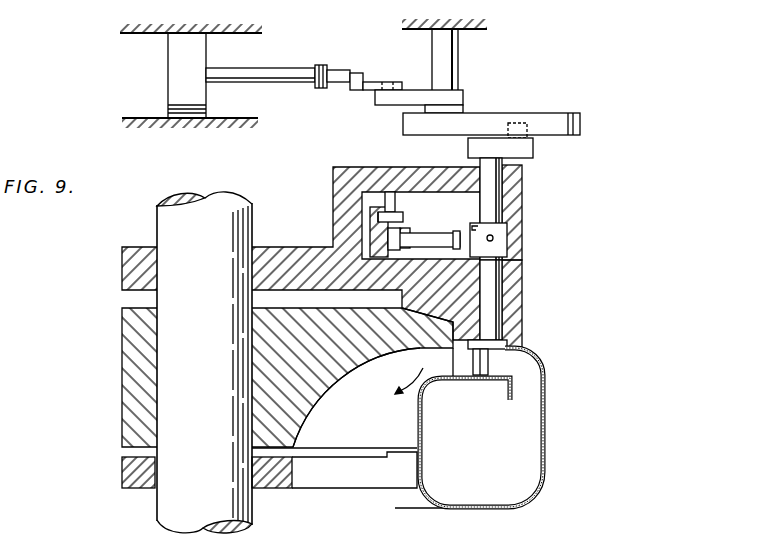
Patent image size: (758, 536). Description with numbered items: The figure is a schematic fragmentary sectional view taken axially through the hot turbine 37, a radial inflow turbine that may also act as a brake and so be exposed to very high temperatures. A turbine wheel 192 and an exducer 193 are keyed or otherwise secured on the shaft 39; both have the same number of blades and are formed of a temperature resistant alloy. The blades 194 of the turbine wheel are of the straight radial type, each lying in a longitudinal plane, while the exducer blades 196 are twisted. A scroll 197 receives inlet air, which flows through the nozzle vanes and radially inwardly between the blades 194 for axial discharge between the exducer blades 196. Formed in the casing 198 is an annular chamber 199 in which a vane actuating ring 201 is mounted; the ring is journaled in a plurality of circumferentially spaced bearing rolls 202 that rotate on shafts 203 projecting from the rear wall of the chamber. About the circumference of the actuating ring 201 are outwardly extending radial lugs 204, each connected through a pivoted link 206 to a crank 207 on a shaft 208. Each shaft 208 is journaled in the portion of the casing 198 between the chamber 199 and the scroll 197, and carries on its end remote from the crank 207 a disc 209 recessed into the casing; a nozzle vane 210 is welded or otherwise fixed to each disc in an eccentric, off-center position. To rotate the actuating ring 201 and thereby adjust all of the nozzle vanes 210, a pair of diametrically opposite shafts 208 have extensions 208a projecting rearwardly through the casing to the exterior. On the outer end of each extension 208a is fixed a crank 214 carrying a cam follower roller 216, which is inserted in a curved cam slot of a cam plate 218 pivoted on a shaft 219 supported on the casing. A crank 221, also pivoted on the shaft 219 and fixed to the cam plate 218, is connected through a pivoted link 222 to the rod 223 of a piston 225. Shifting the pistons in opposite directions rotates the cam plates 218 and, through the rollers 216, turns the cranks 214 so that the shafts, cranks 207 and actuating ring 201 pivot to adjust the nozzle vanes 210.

The hot turbine 37 is at (582, 371).
The shaft 39 is at (167, 505).
The turbine wheel 192 is at (133, 362).
The exducer 193 is at (280, 486).
The blades of the turbine wheel 194 is at (349, 400).
The exducer blades 196 is at (385, 468).
The scroll 197 is at (542, 458).
The casing 198 is at (516, 283).
The annular chamber 199 is at (512, 205).
The vane actuating ring 201 is at (378, 215).
The bearing rolls 202 is at (402, 218).
The shafts 203 is at (392, 196).
The radial lugs 204 is at (386, 258).
The pivoted link 206 is at (430, 240).
The crank 207 is at (493, 238).
The shaft 208 is at (492, 313).
The extension 208a is at (489, 180).
The disc 209 is at (512, 352).
The nozzle vane 210 is at (479, 364).
The crank 214 is at (533, 149).
The cam follower roller 216 is at (528, 137).
The cam plate 218 is at (493, 123).
The shaft 219 is at (447, 57).
The crank 221 is at (405, 100).
The pivoted link 222 is at (372, 82).
The rod 223 is at (300, 71).
The piston 225 is at (186, 63).